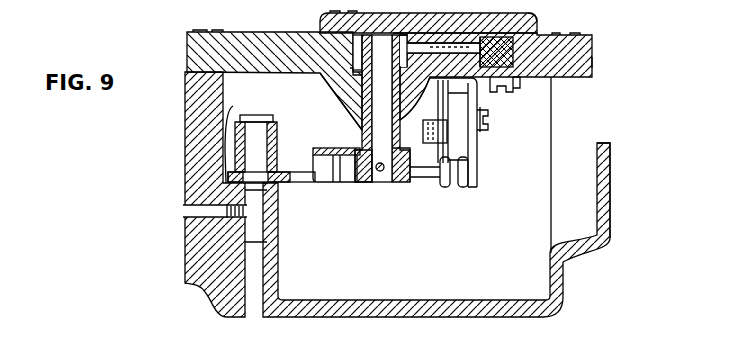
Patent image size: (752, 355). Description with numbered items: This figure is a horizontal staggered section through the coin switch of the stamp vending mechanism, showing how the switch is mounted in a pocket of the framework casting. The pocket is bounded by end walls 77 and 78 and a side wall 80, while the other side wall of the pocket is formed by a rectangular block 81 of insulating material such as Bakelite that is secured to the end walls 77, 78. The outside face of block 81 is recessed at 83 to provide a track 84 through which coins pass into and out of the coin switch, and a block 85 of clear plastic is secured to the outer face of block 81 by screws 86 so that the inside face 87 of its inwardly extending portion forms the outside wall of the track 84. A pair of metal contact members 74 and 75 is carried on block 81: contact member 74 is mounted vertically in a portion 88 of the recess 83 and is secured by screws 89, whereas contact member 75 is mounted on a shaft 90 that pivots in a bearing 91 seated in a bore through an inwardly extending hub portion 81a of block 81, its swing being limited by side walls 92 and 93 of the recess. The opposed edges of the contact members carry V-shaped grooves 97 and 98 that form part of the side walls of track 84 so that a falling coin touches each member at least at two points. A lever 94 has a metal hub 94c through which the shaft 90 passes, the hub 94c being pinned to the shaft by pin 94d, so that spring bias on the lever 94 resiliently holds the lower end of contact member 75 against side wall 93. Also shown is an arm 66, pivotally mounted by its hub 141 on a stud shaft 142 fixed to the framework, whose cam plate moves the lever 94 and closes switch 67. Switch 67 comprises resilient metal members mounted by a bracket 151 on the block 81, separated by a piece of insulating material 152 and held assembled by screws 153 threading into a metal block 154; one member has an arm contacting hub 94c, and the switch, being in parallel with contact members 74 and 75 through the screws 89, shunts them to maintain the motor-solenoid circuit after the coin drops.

The end wall 77 is at (197, 155).
The block 81 is at (250, 46).
The hub portion 81a is at (343, 85).
The screws 86 is at (340, 10).
The contact member 75 is at (353, 45).
The side wall 92 is at (354, 62).
The shaft 90 is at (382, 105).
The contact member 74 is at (514, 60).
The inside face 87 is at (513, 57).
The recess 83 is at (471, 62).
The V-shaped groove 98 is at (402, 52).
The side wall 93 is at (415, 58).
The track 84 is at (450, 53).
The metal block 154 is at (413, 100).
The block 85 is at (538, 33).
The portion of recess 88 is at (590, 63).
The bracket 151 is at (520, 82).
The screws 89 is at (514, 88).
The V-shaped groove 97 is at (497, 112).
The switch 67 is at (497, 135).
The screws 153 is at (480, 130).
The insulating material 152 is at (452, 138).
The bearing 91 is at (367, 137).
The lever 94 is at (350, 153).
The pin 94d is at (383, 173).
The metal hub 94c is at (402, 184).
The arm 66 is at (290, 176).
The stud shaft 142 is at (258, 140).
The hub 141 is at (249, 138).
The side wall 80 is at (453, 310).
The end wall 78 is at (607, 173).